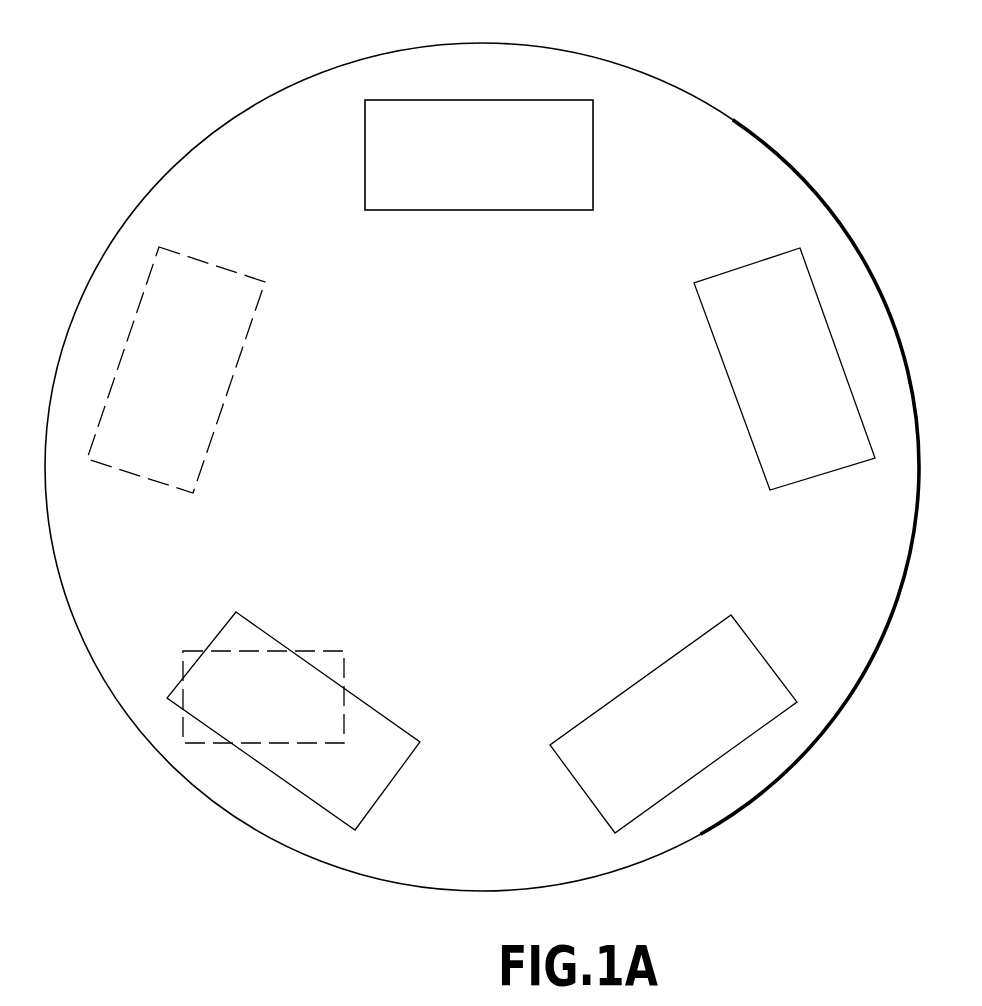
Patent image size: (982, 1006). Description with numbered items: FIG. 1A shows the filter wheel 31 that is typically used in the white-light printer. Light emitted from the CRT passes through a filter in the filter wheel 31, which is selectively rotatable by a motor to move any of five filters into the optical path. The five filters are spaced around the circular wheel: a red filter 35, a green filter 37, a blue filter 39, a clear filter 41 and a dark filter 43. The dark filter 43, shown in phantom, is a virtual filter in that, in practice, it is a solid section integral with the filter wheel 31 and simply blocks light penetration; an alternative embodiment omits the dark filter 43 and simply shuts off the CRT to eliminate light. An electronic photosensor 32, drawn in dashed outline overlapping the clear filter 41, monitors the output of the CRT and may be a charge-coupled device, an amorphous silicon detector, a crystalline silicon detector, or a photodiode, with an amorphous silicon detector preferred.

The filter wheel 31 is at (672, 83).
The electronic photosensor 32 is at (314, 652).
The red filter 35 is at (482, 191).
The green filter 37 is at (796, 408).
The blue filter 39 is at (674, 765).
The clear filter 41 is at (359, 808).
The dark filter 43 is at (169, 456).